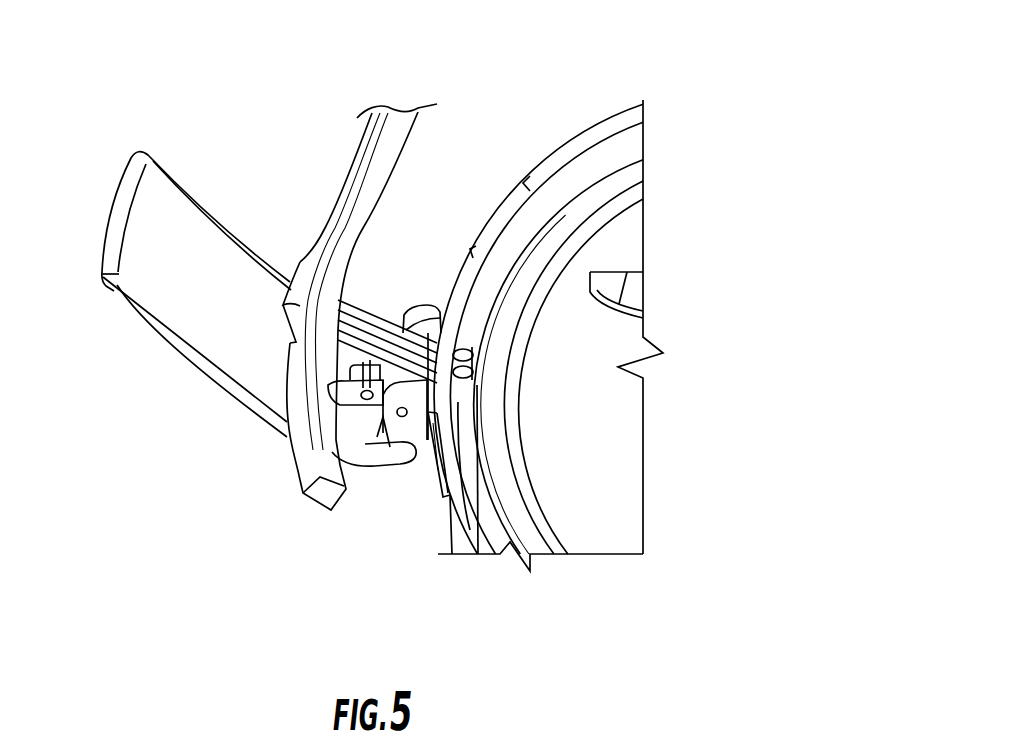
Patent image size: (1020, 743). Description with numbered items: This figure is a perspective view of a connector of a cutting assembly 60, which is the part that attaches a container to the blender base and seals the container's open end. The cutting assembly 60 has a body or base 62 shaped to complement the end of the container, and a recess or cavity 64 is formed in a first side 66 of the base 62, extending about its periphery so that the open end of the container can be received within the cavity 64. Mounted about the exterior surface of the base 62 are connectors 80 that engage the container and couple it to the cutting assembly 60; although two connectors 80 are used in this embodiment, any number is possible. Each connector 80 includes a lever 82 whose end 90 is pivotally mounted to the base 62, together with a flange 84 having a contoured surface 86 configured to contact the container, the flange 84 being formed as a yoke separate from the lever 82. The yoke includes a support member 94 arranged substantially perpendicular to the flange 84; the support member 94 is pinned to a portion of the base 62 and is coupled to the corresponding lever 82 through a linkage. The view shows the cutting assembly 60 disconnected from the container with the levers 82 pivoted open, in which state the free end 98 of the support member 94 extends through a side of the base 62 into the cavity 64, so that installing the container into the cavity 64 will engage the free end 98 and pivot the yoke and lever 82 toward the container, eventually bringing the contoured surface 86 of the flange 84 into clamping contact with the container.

The cutting assembly 60 is at (273, 639).
The base 62 is at (577, 507).
The cavity 64 is at (573, 192).
The first side 66 is at (595, 373).
The connector 80 is at (269, 302).
The lever 82 is at (197, 213).
The flange 84 is at (285, 306).
The contoured surface 86 is at (355, 213).
The end 90 is at (363, 458).
The support member 94 is at (372, 333).
The free end 98 is at (465, 405).